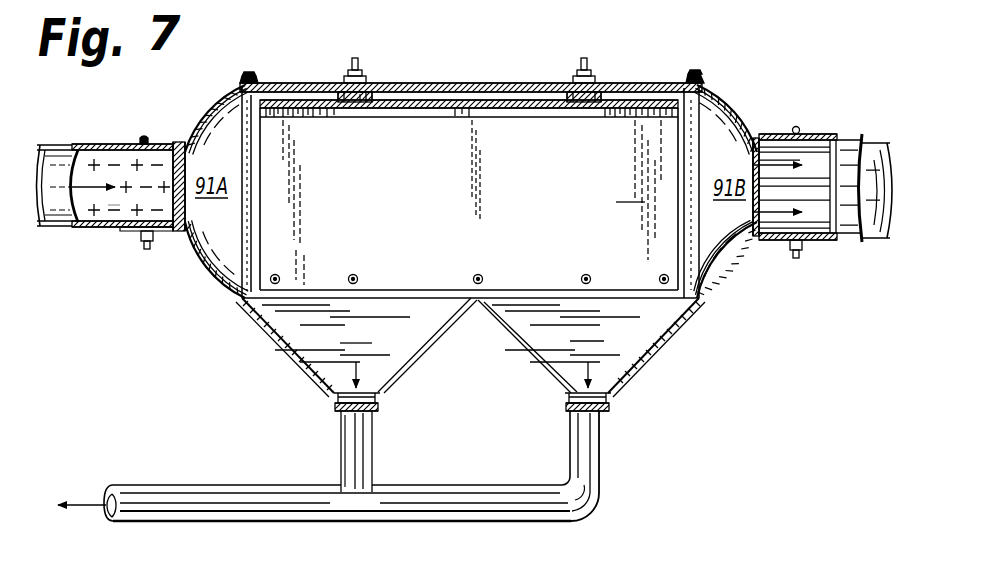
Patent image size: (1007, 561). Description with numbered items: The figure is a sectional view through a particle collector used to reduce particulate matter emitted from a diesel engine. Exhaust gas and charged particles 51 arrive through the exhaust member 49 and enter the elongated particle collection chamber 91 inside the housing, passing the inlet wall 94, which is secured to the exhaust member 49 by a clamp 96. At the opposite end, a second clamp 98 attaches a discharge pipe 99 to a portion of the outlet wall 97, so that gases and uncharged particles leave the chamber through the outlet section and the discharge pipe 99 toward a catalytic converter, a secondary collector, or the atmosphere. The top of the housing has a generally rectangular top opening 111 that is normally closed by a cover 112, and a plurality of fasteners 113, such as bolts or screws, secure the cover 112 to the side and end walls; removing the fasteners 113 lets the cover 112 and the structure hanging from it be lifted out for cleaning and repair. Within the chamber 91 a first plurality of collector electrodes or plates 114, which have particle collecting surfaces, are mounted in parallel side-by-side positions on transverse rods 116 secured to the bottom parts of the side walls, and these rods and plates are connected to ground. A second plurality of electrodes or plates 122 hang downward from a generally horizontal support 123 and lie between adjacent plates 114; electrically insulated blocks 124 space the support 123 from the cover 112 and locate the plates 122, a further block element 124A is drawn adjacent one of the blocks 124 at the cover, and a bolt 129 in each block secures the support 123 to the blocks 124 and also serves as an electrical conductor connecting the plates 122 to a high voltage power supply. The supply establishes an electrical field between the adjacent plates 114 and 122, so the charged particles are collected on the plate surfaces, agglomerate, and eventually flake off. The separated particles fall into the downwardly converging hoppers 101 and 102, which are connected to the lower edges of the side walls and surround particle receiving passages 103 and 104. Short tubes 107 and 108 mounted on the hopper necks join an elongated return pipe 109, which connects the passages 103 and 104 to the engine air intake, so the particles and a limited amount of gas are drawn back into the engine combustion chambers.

The exhaust member 49 is at (66, 147).
The charged particles 51 is at (120, 208).
The particle collection chamber 91 is at (250, 262).
The inlet wall 94 is at (212, 112).
The clamp 96 is at (146, 249).
The outlet wall 97 is at (740, 120).
The second clamp 98 is at (800, 256).
The discharge pipe 99 is at (864, 134).
The hopper 101 is at (298, 368).
The hopper 102 is at (548, 372).
The particle receiving passage 103 is at (369, 345).
The particle receiving passage 104 is at (559, 346).
The short tube 107 is at (372, 450).
The short tube 108 is at (604, 459).
The return tube or pipe 109 is at (246, 484).
The top opening 111 is at (260, 80).
The cover 112 is at (648, 84).
The fasteners 113 is at (704, 77).
The collector electrodes or plates 114 is at (630, 190).
The transverse rods 116 is at (348, 276).
The second electrodes or plates 122 is at (560, 112).
The horizontal support 123 is at (476, 110).
The electrically insulated blocks 124 is at (566, 90).
The mounting nut washer 124A is at (374, 93).
The bolt 129 is at (362, 62).